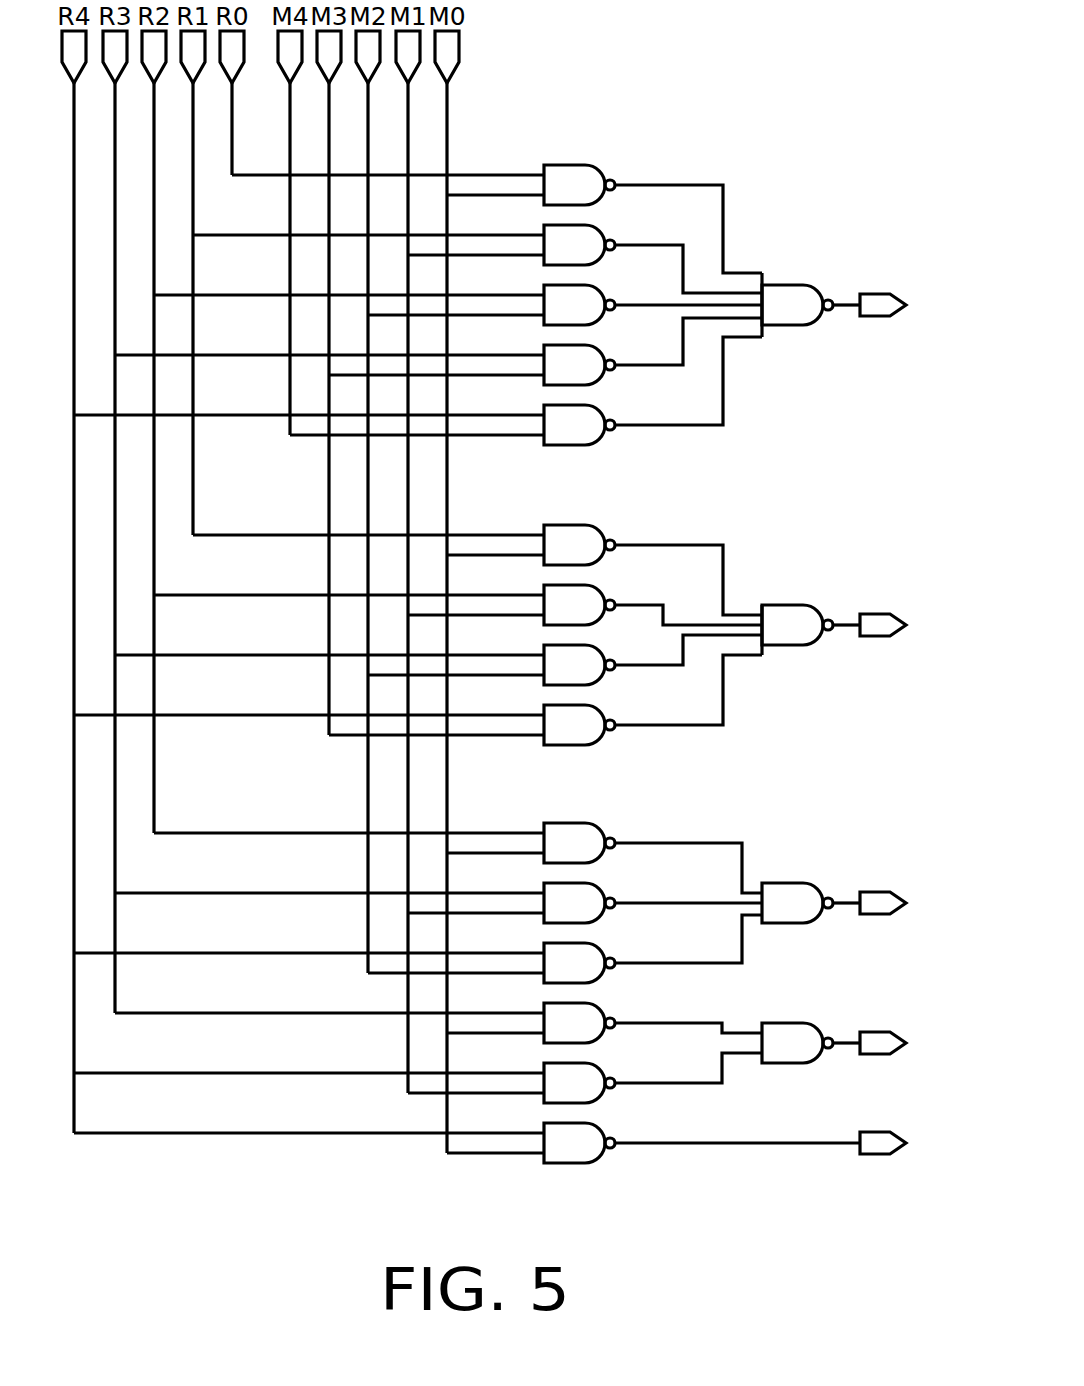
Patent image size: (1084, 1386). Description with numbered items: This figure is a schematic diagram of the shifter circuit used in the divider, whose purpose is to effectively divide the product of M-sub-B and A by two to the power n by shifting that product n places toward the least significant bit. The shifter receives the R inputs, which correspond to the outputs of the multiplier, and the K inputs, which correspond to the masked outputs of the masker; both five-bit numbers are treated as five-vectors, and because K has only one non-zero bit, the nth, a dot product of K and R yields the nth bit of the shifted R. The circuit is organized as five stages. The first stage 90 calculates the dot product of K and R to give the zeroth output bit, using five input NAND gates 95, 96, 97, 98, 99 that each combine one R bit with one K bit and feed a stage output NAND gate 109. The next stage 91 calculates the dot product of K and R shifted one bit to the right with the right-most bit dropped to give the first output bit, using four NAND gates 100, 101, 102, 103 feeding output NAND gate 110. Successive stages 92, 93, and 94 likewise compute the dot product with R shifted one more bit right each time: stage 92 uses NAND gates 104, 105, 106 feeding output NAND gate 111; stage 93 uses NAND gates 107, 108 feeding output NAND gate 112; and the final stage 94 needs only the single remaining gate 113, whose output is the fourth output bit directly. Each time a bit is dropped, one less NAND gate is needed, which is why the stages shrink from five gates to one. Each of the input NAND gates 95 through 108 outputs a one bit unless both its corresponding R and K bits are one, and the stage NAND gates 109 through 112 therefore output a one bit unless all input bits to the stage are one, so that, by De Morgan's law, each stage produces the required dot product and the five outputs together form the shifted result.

The first stage 90 is at (724, 110).
The next stage 91 is at (770, 507).
The successive stage 92 is at (775, 823).
The successive stage 93 is at (802, 988).
The successive stage 94 is at (795, 1113).
The NAND gate 95 is at (572, 182).
The NAND gate 96 is at (557, 240).
The NAND gate 97 is at (560, 302).
The NAND gate 98 is at (560, 362).
The NAND gate 99 is at (557, 420).
The NAND gate 100 is at (568, 540).
The NAND gate 101 is at (562, 600).
The NAND gate 102 is at (570, 662).
The NAND gate 103 is at (568, 722).
The NAND gate 104 is at (563, 840).
The NAND gate 105 is at (565, 900).
The NAND gate 106 is at (558, 958).
The NAND gate 107 is at (560, 1020).
The NAND gate 108 is at (567, 1080).
The NAND gate 109 is at (790, 300).
The NAND gate 110 is at (787, 622).
The NAND gate 111 is at (783, 893).
The NAND gate 112 is at (777, 1035).
The NAND gate 113 is at (575, 1150).